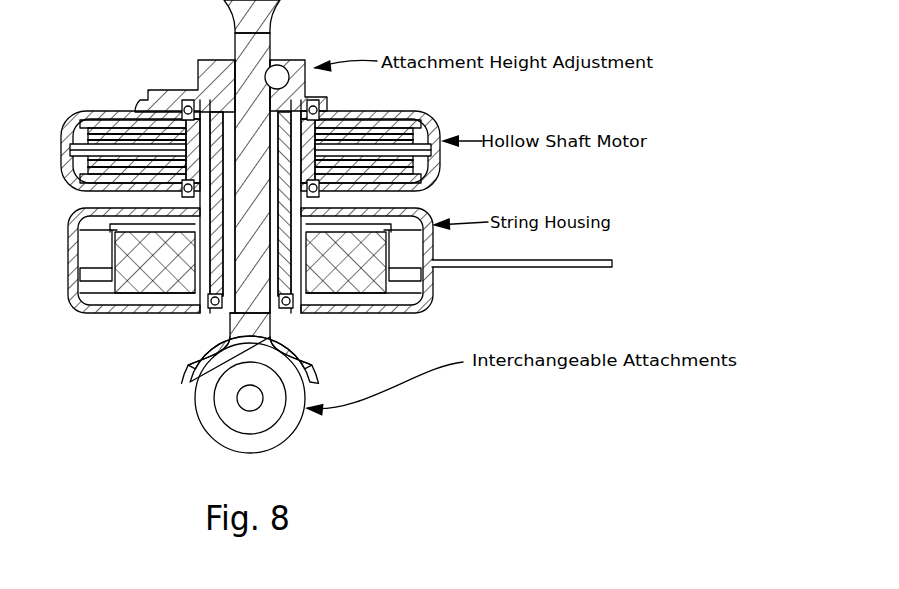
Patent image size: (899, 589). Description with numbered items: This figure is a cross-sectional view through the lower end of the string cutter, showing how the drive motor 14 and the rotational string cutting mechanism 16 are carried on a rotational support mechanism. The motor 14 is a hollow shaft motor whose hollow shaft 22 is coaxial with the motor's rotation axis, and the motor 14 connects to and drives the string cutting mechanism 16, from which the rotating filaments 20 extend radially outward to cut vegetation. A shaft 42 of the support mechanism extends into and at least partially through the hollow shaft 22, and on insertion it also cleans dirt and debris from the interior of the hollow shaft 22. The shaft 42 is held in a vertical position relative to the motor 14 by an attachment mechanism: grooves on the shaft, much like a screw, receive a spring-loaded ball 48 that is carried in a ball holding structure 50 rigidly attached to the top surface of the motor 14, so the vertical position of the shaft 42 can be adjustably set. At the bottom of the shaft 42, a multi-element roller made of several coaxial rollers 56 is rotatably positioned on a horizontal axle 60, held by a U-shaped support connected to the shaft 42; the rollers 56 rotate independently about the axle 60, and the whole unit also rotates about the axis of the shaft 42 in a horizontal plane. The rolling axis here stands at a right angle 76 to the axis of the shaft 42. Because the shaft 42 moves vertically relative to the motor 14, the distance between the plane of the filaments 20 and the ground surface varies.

The motor 14 is at (76, 124).
The rotational string cutting mechanism 16 is at (76, 217).
The rotating filaments 20 is at (494, 268).
The hollow shaft 22 is at (200, 313).
The shaft 42 is at (255, 33).
The ball 48 is at (287, 62).
The ball holding structure 50 is at (297, 78).
The coaxial rollers 56 is at (207, 428).
The axle 60 is at (262, 393).
The right angle 76 is at (263, 400).